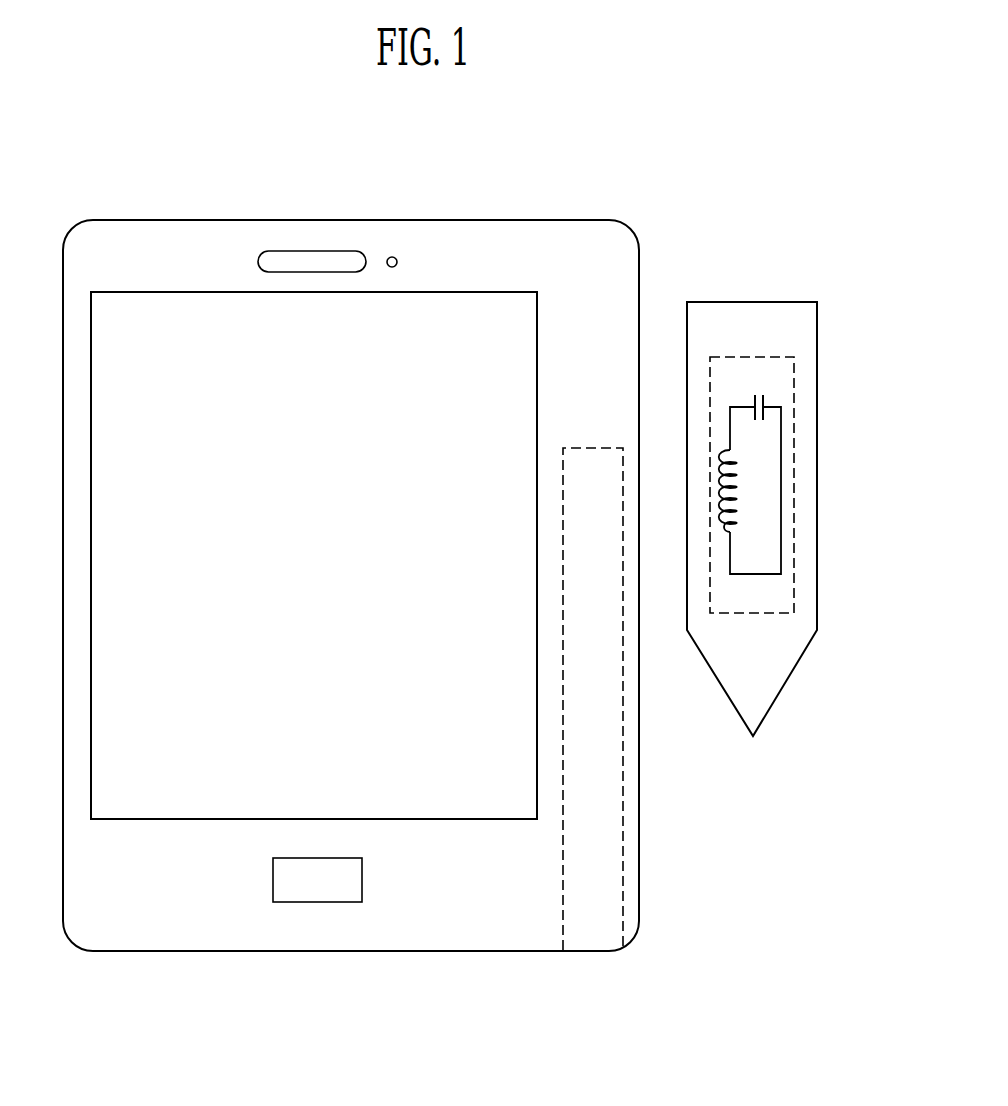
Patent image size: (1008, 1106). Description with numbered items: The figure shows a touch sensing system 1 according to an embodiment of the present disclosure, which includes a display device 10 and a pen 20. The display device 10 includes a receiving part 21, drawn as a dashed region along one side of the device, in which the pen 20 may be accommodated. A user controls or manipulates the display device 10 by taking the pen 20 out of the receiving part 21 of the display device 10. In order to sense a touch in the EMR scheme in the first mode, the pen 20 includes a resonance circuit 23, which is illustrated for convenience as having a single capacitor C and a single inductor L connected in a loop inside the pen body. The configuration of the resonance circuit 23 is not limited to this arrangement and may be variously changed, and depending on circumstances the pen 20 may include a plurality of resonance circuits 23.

The touch sensing system 1 is at (755, 156).
The display device 10 is at (274, 221).
The pen 20 is at (768, 302).
The receiving part 21 is at (613, 881).
The resonance circuit 23 is at (795, 479).